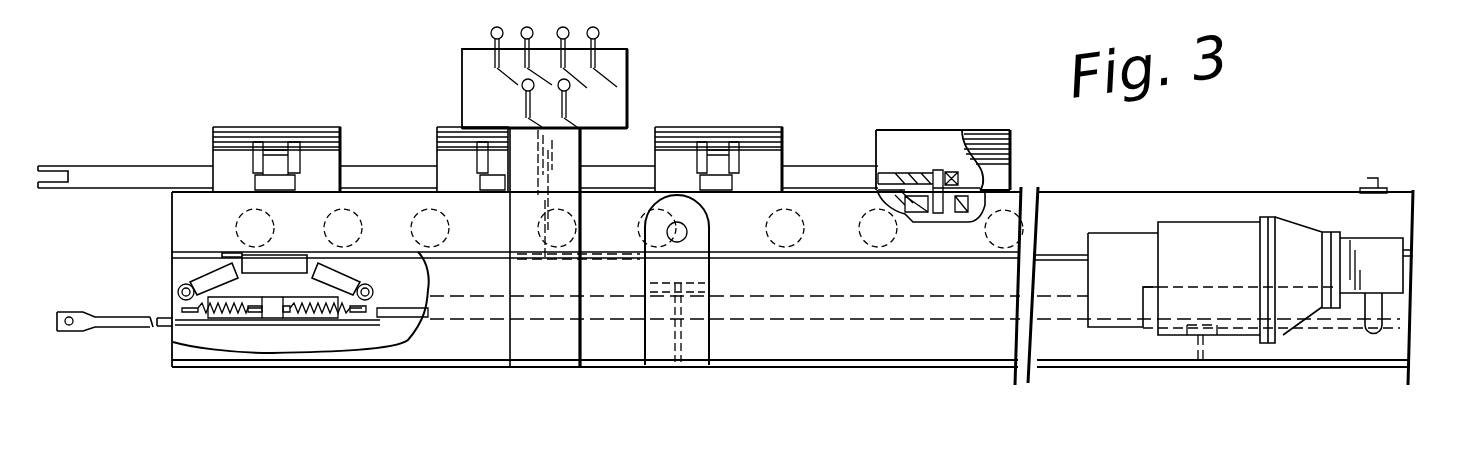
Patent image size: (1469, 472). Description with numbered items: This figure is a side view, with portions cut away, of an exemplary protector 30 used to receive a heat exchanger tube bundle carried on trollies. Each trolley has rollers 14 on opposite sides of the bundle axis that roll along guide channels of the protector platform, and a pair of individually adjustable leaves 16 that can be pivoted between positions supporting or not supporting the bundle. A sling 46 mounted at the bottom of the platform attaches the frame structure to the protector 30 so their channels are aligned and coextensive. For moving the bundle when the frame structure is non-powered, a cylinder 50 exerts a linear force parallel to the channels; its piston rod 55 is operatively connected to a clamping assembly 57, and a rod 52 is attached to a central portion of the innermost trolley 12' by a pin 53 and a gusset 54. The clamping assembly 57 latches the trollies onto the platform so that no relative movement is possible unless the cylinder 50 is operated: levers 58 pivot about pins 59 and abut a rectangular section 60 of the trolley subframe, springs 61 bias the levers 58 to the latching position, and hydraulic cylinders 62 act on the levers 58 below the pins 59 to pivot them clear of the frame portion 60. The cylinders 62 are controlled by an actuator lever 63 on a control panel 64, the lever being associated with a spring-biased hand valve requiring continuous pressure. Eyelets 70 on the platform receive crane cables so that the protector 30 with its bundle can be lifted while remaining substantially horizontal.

The innermost trolley 12' is at (1092, 178).
The rollers 14 is at (548, 228).
The adjustable leaves 16 is at (437, 138).
The protector 30 is at (933, 66).
The slings 46 is at (148, 331).
The cylinder 50 is at (1170, 322).
The rod 52 is at (131, 165).
The pin 53 is at (948, 183).
The gusset 54 is at (884, 172).
The piston rod 55 is at (927, 308).
The clamping assembly 57 is at (232, 223).
The levers 58 is at (338, 274).
The pins 59 is at (373, 291).
The rectangular section of trolley subframe 60 is at (295, 262).
The springs 61 is at (328, 320).
The hydraulic cylinders 62 is at (290, 298).
The actuator lever 63 is at (570, 88).
The control panel 64 is at (627, 100).
The eyelets 70 is at (692, 232).